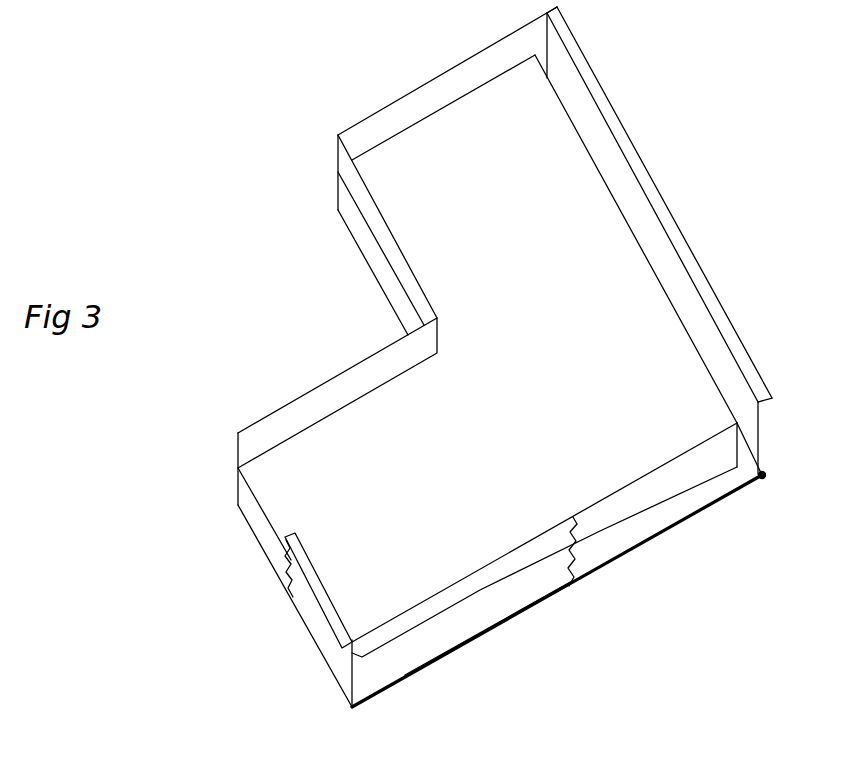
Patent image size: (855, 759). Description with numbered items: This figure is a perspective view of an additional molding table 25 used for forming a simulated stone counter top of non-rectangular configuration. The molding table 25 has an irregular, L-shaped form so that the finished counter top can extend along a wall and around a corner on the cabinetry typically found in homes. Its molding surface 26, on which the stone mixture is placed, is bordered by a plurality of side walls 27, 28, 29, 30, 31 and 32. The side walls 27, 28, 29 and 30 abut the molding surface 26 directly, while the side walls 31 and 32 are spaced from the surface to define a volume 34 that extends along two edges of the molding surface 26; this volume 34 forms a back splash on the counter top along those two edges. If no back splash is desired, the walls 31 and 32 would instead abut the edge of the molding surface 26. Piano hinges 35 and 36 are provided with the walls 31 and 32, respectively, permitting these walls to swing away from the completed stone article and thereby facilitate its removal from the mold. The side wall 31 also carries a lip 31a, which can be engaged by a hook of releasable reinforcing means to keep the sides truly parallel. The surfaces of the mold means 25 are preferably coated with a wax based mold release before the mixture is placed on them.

The molding table 25 is at (251, 393).
The molding surface 26 is at (601, 438).
The side wall 27 is at (313, 613).
The side wall 28 is at (338, 375).
The side wall 29 is at (358, 188).
The side wall 30 is at (414, 105).
The side wall 31 is at (631, 192).
The lip 31a is at (708, 281).
The side wall 32 is at (497, 605).
The volume 34 is at (647, 503).
The piano hinge 35 is at (767, 474).
The piano hinge 36 is at (405, 678).